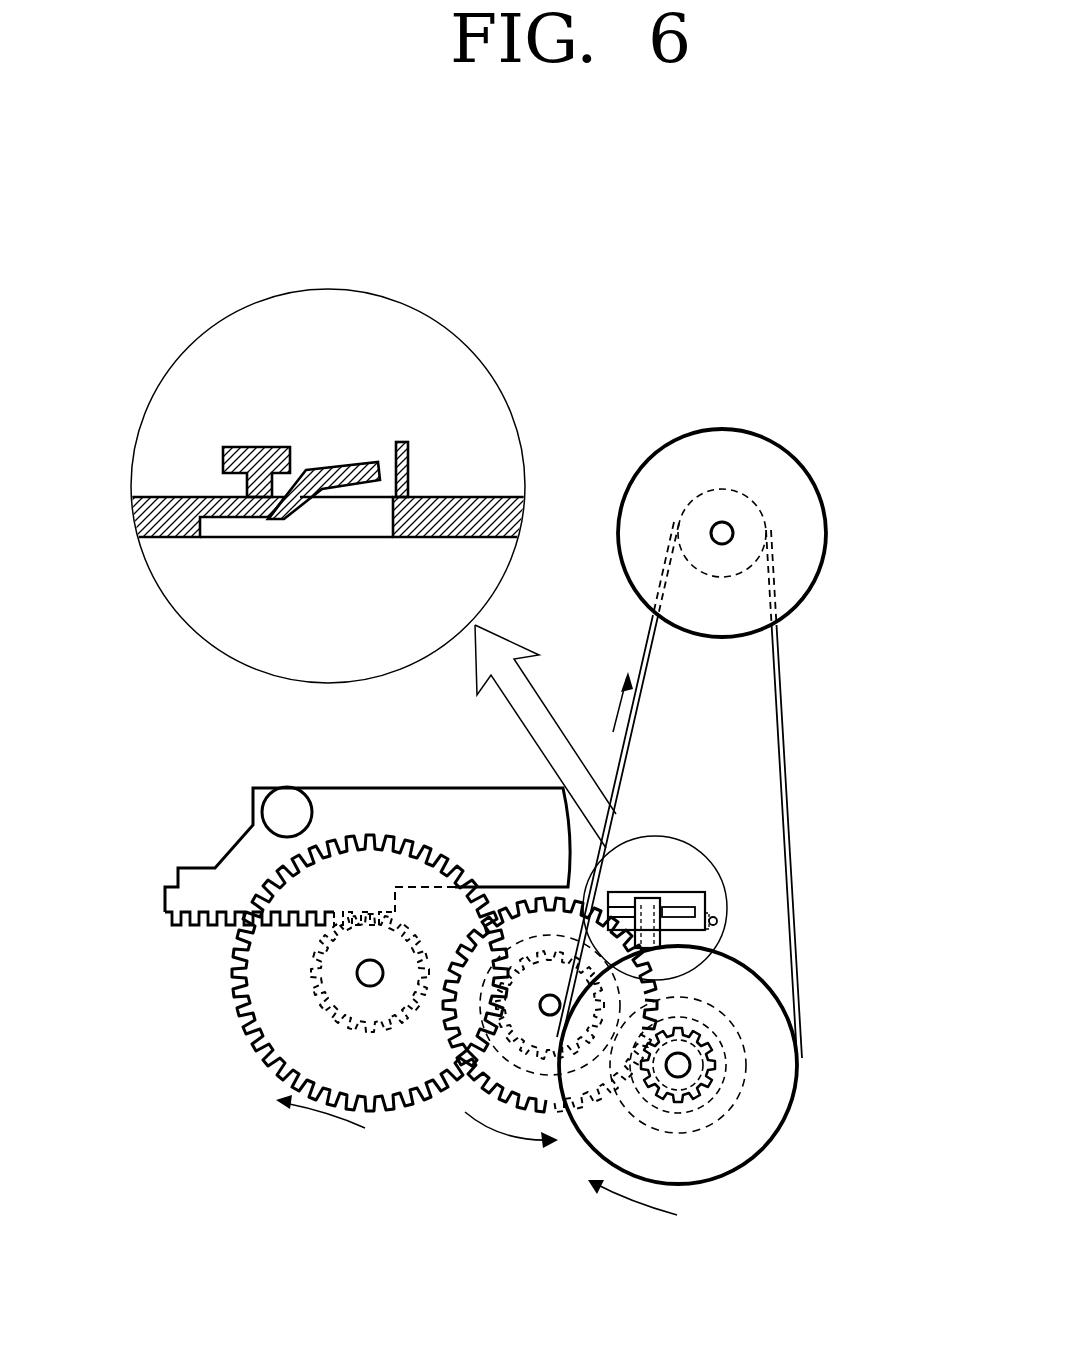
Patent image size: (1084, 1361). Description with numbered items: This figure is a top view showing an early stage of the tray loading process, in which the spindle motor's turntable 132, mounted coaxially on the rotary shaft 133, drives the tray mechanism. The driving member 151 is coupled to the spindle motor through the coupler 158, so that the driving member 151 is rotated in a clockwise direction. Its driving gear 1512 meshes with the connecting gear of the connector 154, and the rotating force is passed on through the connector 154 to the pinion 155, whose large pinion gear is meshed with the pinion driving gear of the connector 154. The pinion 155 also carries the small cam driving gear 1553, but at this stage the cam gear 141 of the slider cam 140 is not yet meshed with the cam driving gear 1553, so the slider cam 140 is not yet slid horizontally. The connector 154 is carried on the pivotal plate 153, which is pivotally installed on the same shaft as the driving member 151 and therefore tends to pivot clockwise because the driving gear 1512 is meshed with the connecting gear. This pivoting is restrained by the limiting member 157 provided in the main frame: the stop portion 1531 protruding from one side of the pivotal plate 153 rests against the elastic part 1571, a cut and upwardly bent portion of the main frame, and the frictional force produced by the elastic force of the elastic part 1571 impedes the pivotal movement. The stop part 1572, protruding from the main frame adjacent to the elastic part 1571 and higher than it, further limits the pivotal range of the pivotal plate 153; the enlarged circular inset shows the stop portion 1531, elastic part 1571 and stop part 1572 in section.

The turntable 132 is at (782, 467).
The rotary shaft 133 is at (758, 526).
The slider cam 140 is at (453, 788).
The cam gear 141 is at (167, 928).
The driving member 151 is at (773, 1140).
The driving gear 1512 is at (520, 1043).
The pivotal plate 153 is at (628, 1110).
The stop portion 1531 is at (260, 447).
The connector 154 is at (528, 1092).
The pinion 155 is at (275, 1040).
The cam driving gear 1553 is at (317, 980).
The limiting member 157 is at (433, 224).
The elastic part 1571 is at (372, 463).
The stop part 1572 is at (405, 445).
The coupler 158 is at (782, 765).